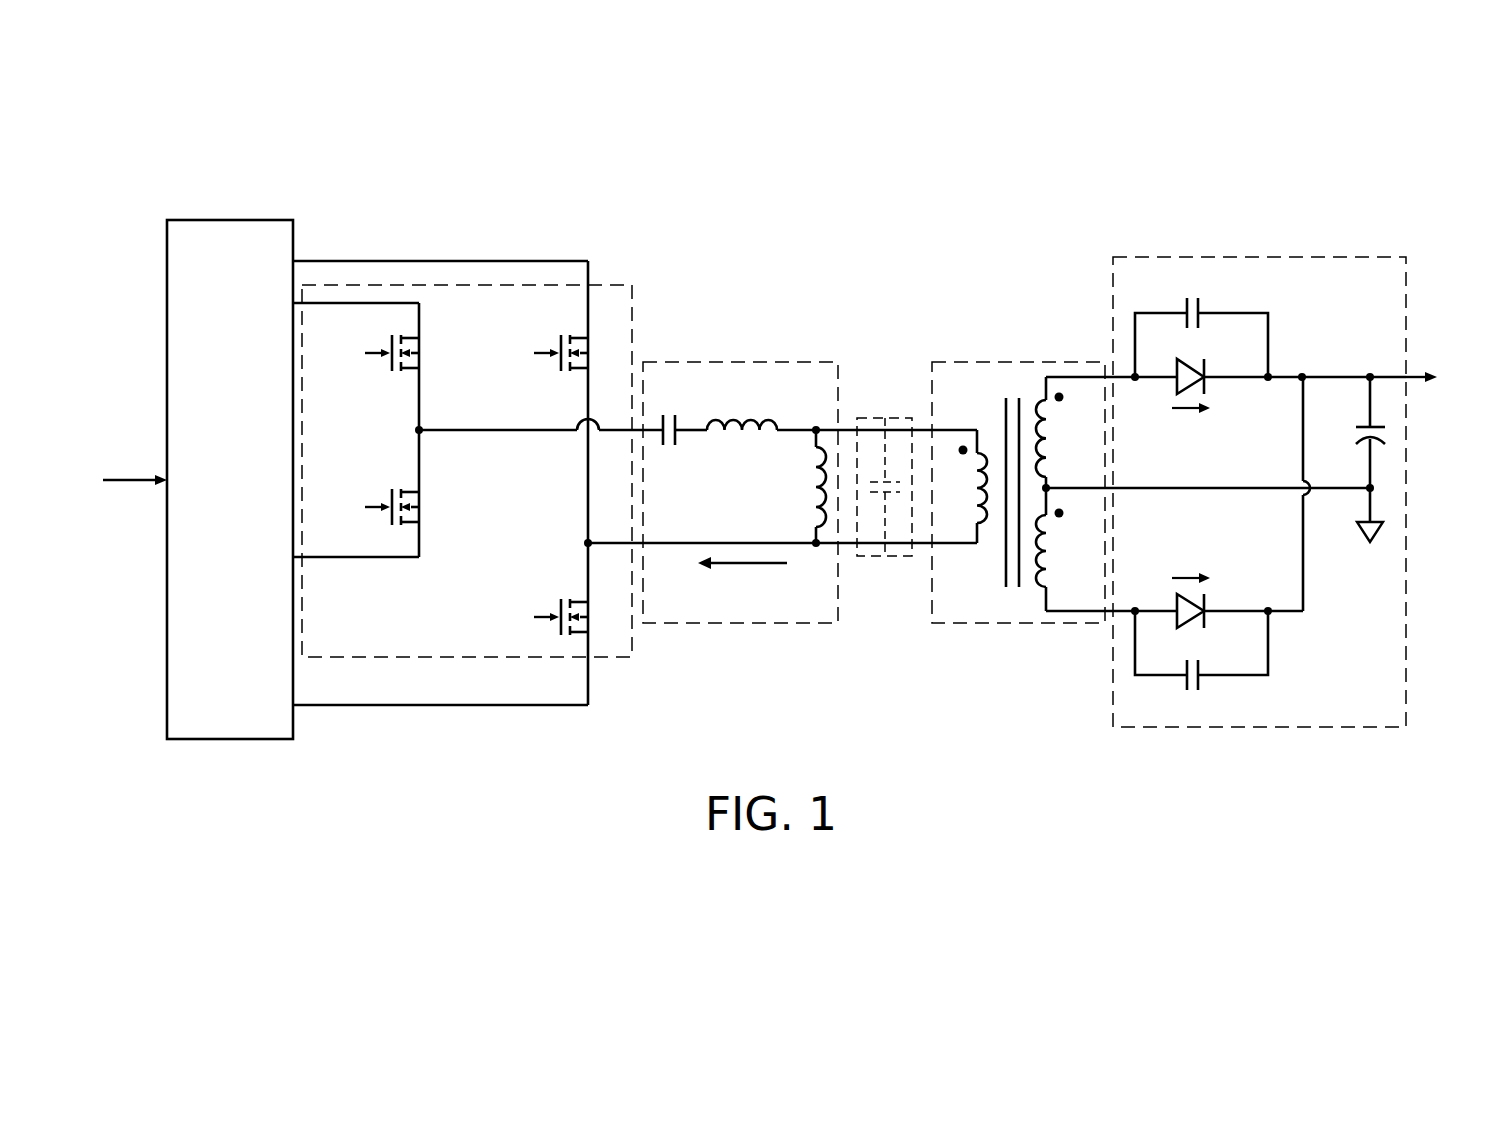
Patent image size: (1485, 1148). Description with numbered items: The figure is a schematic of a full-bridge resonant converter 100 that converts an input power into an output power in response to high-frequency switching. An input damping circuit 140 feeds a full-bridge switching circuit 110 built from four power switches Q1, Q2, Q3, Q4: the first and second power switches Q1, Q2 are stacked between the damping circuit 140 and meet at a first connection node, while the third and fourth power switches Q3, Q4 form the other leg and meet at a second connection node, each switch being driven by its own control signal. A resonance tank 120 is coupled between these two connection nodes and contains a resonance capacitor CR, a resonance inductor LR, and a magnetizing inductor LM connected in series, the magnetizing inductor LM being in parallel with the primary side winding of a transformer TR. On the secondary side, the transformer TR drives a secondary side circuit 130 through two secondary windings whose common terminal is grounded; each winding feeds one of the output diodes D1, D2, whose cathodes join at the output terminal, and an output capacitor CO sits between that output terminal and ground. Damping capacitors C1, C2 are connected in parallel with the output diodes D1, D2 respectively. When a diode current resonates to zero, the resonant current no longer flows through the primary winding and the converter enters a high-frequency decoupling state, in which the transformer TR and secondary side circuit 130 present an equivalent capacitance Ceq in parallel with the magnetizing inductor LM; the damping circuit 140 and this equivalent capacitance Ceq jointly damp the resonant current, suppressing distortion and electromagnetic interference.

The full-bridge resonant converter 100 is at (1451, 783).
The full-bridge switching circuit 110 is at (632, 285).
The resonance tank 120 is at (748, 362).
The secondary side circuit 130 is at (1257, 257).
The damping circuit 140 is at (228, 220).
The power switch Q1 is at (383, 353).
The second power switch Q2 is at (383, 507).
The third power switch Q3 is at (552, 353).
The fourth power switch Q4 is at (552, 617).
The resonance capacitor CR is at (669, 450).
The resonance inductor LR is at (742, 410).
The magnetizing inductor LM is at (802, 486).
The equivalent capacitance Ceq is at (883, 556).
The transformer TR is at (1006, 362).
The output diode D1 is at (1203, 394).
The output diode D2 is at (1205, 596).
The damping capacitor C1 is at (1201, 320).
The damping capacitor C2 is at (1201, 667).
The output capacitor CO is at (1352, 432).